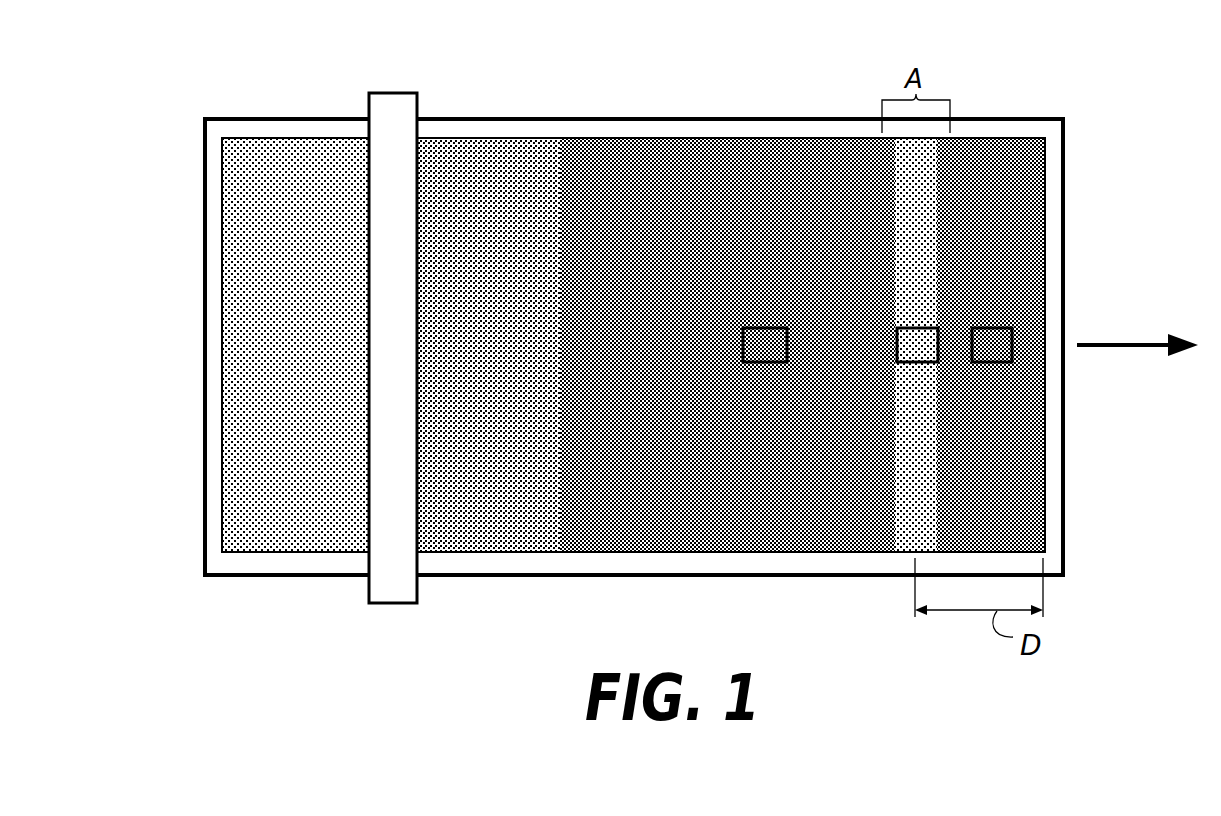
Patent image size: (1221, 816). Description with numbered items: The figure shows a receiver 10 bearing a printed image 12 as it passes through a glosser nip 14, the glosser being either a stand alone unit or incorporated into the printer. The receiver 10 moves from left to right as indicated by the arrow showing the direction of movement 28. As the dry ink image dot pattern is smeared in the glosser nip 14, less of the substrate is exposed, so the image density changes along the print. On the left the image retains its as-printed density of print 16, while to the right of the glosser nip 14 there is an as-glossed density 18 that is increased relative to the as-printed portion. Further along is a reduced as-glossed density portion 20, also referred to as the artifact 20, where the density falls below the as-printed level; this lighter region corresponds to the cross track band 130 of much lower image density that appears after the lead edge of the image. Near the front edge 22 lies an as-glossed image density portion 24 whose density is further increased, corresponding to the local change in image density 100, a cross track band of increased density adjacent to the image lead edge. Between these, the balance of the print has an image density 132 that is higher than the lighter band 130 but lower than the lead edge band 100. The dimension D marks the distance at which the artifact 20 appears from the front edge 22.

The receiver 10 is at (203, 152).
The printed image 12 is at (575, 138).
The glosser nip 14 is at (392, 93).
The as-printed density of print 16 is at (305, 155).
The as-glossed density 18 is at (642, 138).
The reduced as-glossed density portion 20 is at (885, 168).
The front edge 22 is at (1068, 442).
The as-glossed image density portion 24 is at (1012, 138).
The direction of movement 28 is at (1137, 347).
The local change in image density 100 is at (992, 328).
The cross track band 130 is at (918, 328).
The image density 132 is at (762, 327).